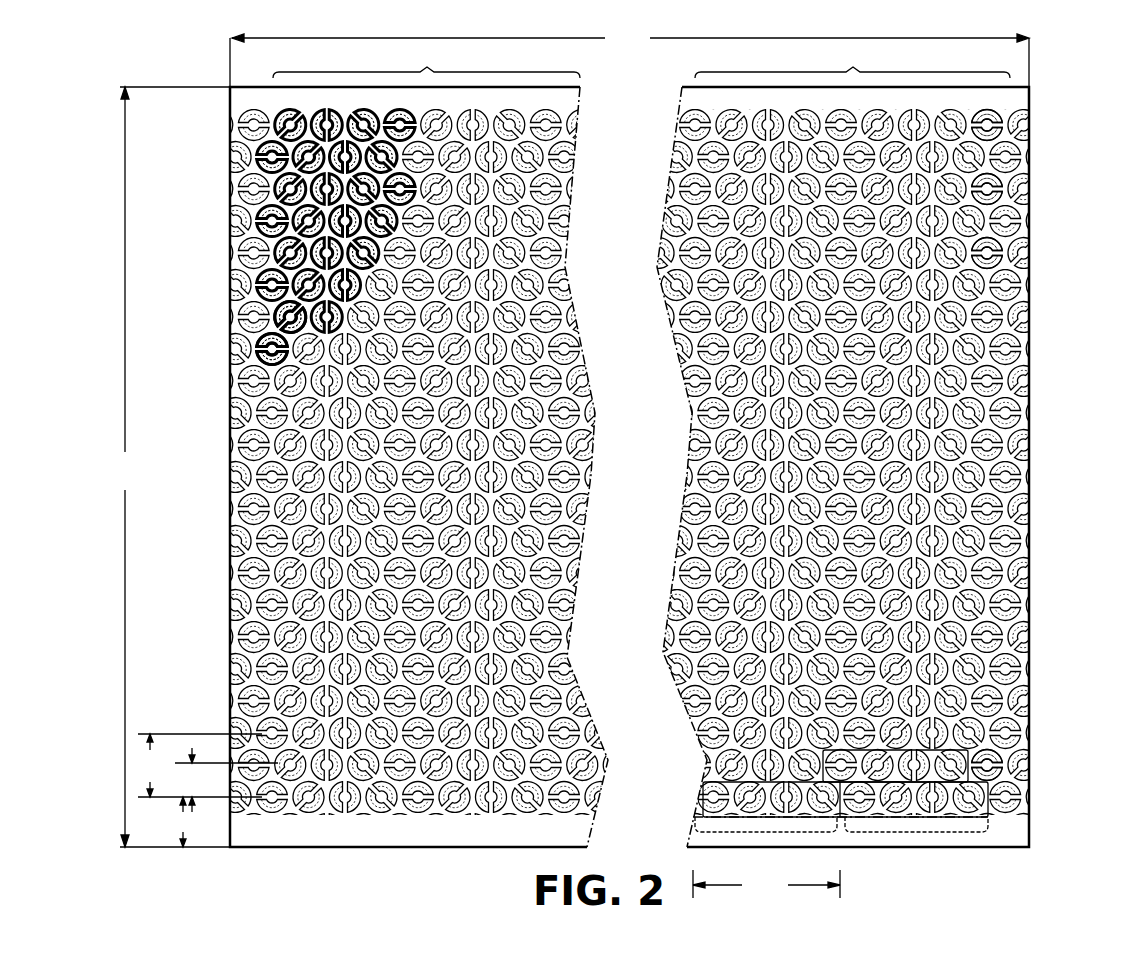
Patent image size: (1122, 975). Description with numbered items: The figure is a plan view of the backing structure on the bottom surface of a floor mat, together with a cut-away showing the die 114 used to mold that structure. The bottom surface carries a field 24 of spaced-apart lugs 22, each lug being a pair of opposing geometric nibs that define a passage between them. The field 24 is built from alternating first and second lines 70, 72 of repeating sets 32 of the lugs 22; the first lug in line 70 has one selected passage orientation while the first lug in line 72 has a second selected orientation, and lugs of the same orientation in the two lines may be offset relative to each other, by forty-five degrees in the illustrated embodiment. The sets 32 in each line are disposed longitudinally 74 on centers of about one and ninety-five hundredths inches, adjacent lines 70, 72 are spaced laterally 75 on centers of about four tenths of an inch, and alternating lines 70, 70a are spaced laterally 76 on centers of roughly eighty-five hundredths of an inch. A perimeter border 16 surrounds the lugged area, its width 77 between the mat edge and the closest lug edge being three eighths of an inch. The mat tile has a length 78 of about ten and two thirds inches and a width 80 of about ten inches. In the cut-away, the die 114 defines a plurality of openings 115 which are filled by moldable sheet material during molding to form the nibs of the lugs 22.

The perimeter border 16 is at (238, 393).
The lug 22 is at (993, 243).
The field 24 is at (641, 60).
The set 32 is at (968, 752).
The first line 70 is at (992, 803).
The alternating first line 70a is at (1003, 723).
The second line 72 is at (1008, 768).
The longitudinal spacing 74 is at (766, 885).
The lateral spacing of adjacent lines 75 is at (226, 780).
The lateral spacing of alternating lines 76 is at (197, 765).
The border width 77 is at (180, 833).
The length 78 is at (629, 56).
The width 80 is at (169, 467).
The die 114 is at (238, 225).
The openings 115 is at (257, 353).